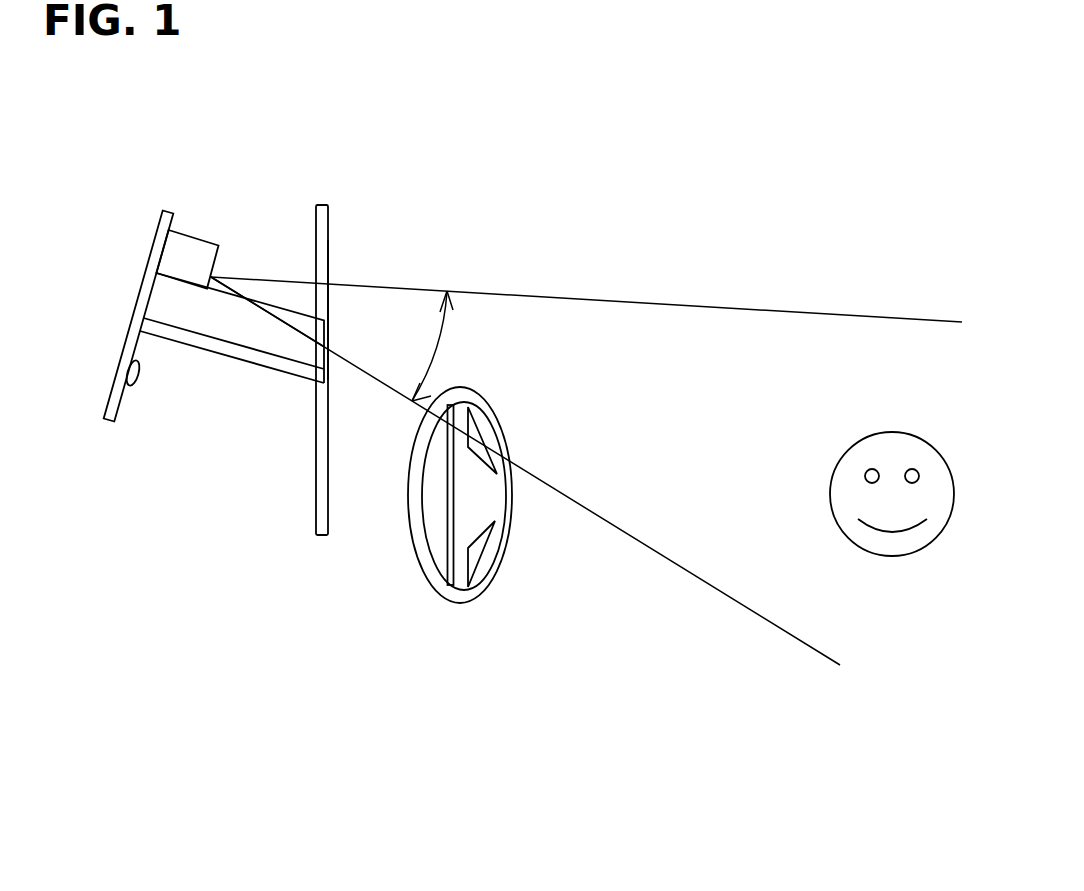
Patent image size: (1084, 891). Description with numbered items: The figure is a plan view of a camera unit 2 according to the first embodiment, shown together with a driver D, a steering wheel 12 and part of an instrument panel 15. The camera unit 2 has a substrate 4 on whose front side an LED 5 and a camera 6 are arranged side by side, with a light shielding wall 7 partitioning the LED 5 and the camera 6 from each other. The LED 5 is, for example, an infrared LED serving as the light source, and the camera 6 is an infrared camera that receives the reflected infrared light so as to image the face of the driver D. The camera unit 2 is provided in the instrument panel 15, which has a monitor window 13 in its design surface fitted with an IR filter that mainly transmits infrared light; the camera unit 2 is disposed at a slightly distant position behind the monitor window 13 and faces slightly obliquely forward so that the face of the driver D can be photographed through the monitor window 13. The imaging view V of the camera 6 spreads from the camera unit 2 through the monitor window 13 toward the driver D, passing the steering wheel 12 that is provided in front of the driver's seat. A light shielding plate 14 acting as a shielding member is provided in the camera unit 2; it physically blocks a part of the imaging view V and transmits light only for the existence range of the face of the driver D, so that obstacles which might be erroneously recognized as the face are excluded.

The camera unit 2 is at (203, 214).
The substrate 4 is at (128, 332).
The LED 5 is at (138, 384).
The camera 6 is at (210, 242).
The light shielding wall 7 is at (241, 366).
The steering wheel 12 is at (460, 604).
The monitor window 13 is at (328, 312).
The light shielding plate 14 is at (262, 322).
The instrument panel 15 is at (322, 537).
The imaging view V is at (443, 332).
The driver D is at (898, 432).